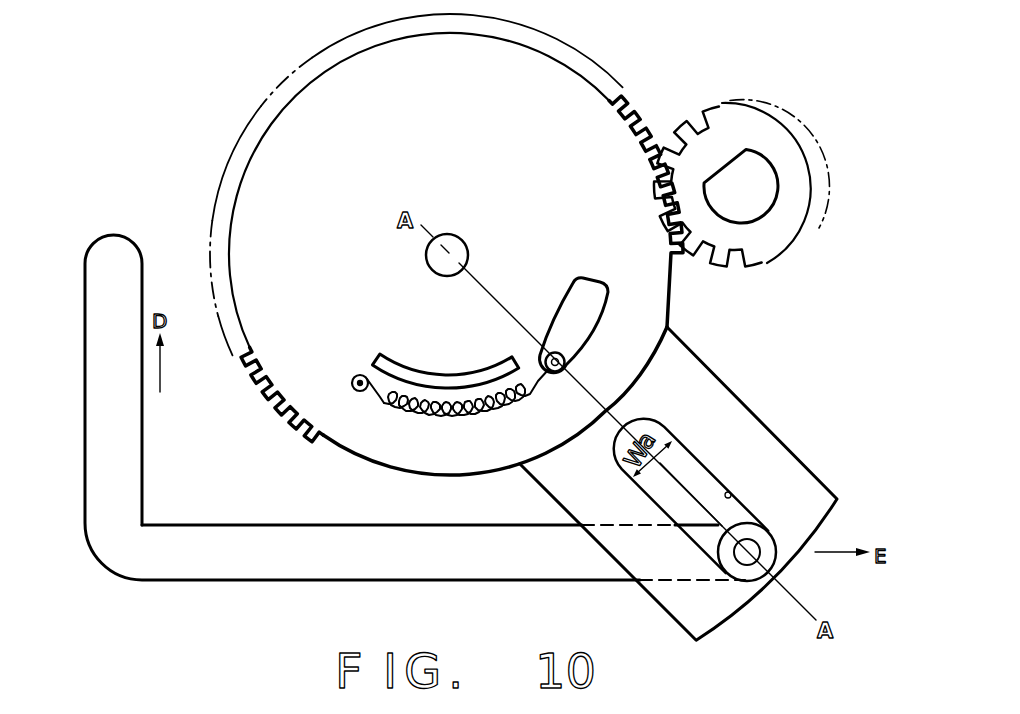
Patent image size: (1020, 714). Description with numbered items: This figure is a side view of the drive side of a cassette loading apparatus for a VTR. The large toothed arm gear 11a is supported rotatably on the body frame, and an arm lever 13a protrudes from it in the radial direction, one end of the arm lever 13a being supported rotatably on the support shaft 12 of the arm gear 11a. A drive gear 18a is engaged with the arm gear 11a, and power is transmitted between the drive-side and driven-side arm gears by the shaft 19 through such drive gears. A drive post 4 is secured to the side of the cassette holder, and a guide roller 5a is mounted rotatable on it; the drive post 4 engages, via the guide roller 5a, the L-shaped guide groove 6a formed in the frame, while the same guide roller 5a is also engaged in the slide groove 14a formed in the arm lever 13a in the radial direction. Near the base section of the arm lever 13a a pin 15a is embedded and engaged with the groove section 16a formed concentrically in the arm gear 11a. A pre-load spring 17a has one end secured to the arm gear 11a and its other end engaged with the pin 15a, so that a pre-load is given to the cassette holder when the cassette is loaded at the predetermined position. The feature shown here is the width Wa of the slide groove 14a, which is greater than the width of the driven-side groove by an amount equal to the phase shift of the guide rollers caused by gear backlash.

The arm gear 11a is at (310, 173).
The support shaft 12 is at (452, 240).
The drive gear 18a is at (764, 106).
The shaft 19 is at (765, 195).
The groove section 16a is at (604, 318).
The arm lever 13a is at (712, 406).
The slide groove 14a is at (730, 493).
The guide roller 5a is at (765, 537).
The drive post 4 is at (725, 565).
The L-shaped guide groove 6a is at (96, 512).
The pre-load spring 17a is at (440, 415).
The pin 15a is at (550, 378).